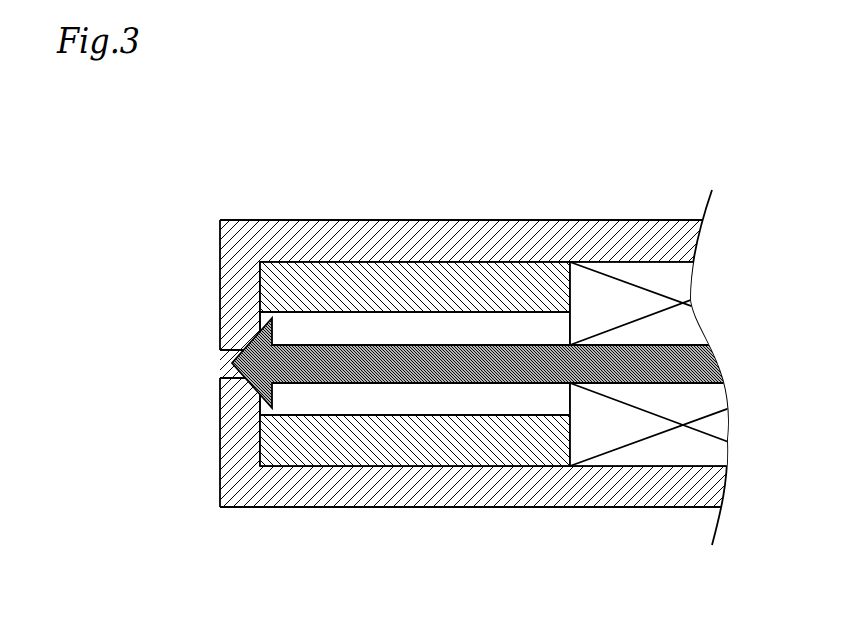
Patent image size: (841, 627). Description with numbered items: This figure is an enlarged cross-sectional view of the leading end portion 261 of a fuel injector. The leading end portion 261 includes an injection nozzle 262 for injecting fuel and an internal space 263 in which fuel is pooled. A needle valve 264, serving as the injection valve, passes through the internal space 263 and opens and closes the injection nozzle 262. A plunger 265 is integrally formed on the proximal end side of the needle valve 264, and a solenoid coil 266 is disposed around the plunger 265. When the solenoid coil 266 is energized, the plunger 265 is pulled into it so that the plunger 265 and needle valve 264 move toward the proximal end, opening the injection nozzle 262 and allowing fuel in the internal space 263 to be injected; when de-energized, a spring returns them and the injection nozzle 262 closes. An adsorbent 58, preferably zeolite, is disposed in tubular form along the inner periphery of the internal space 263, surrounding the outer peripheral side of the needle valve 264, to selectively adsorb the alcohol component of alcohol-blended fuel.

The adsorbent 58 is at (308, 278).
The leading end portion 261 is at (388, 240).
The injection nozzle 262 is at (220, 372).
The internal space 263 is at (481, 330).
The needle valve 264 is at (289, 388).
The plunger 265 is at (627, 365).
The solenoid coil 266 is at (667, 280).